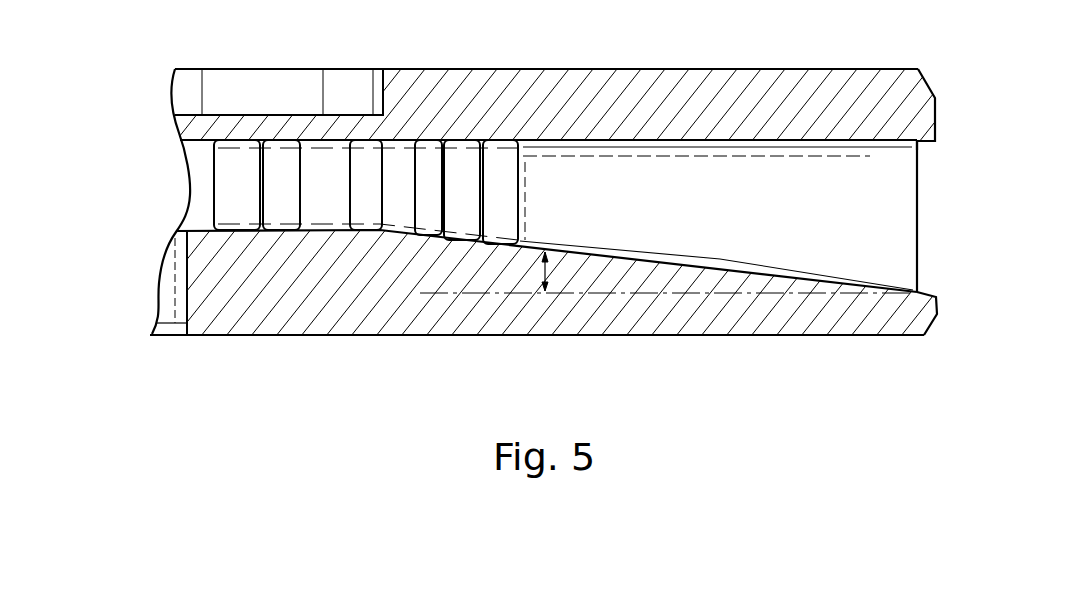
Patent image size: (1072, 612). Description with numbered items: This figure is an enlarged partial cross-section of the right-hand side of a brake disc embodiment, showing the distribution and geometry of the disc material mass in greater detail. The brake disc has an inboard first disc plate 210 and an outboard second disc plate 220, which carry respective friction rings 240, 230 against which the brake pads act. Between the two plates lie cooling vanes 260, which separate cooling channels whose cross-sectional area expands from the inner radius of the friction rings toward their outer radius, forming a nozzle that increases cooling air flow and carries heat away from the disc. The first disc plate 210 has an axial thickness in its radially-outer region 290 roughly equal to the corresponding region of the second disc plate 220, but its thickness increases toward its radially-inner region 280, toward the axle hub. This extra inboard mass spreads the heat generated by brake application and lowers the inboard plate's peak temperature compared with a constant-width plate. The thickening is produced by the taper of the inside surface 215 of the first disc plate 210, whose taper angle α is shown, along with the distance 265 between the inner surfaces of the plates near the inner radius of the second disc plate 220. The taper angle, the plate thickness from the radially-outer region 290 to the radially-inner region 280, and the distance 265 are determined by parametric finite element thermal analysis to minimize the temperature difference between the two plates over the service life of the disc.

The first disc plate 210 is at (940, 312).
The inside surface 215 is at (853, 281).
The second disc plate 220 is at (935, 115).
The friction ring 230 is at (773, 70).
The friction ring 240 is at (595, 336).
The cooling vanes 260 is at (917, 193).
The distance 265 is at (395, 229).
The radially-inner region 280 is at (292, 337).
The radially-outer region 290 is at (793, 322).